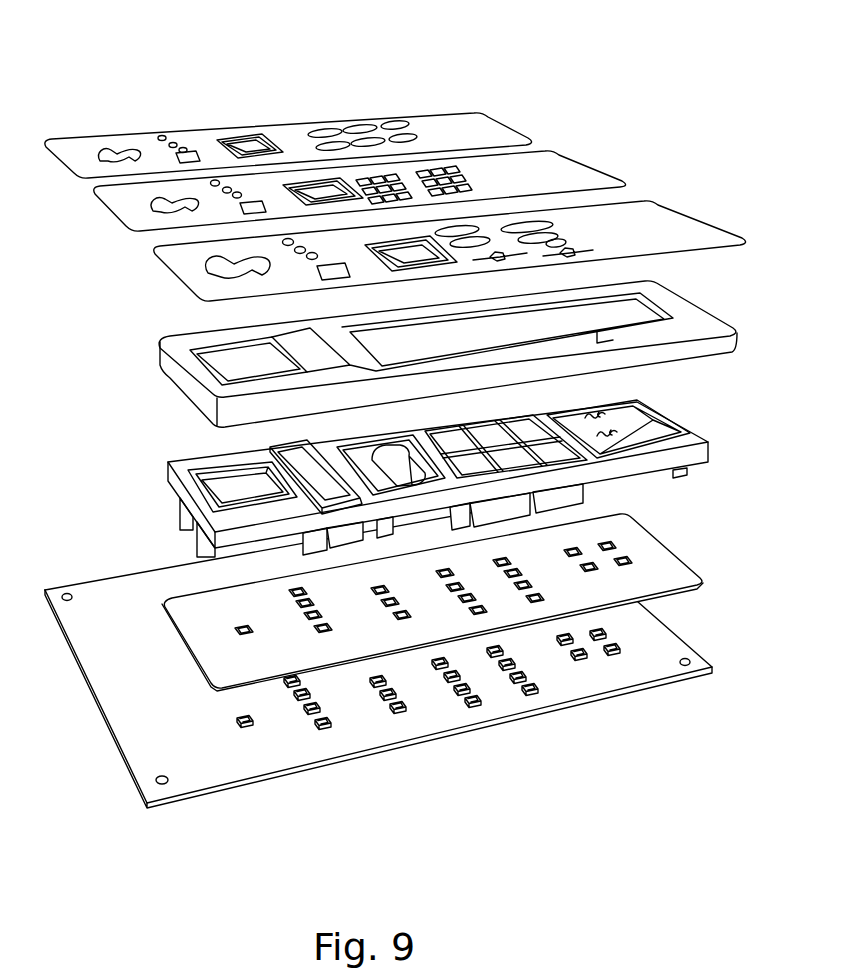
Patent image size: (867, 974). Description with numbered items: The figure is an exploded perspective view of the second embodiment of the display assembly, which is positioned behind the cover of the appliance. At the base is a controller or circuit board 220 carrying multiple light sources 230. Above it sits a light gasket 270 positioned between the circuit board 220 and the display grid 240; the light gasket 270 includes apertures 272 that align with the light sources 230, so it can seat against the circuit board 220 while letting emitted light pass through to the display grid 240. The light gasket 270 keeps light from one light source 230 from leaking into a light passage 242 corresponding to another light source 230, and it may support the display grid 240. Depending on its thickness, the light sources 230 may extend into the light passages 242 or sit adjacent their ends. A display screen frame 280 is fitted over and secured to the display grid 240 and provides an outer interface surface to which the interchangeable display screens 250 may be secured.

The circuit board 220 is at (645, 660).
The light sources 230 is at (472, 702).
The display grid 240 is at (715, 425).
The light passages 242 is at (604, 433).
The display screen 250 is at (670, 220).
The light gasket 270 is at (683, 562).
The apertures 272 is at (630, 560).
The display screen frame 280 is at (710, 327).